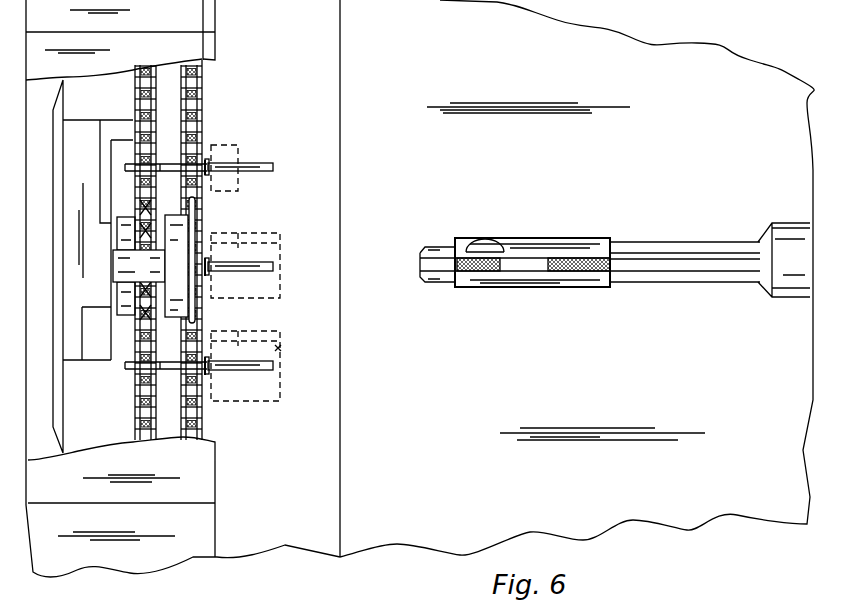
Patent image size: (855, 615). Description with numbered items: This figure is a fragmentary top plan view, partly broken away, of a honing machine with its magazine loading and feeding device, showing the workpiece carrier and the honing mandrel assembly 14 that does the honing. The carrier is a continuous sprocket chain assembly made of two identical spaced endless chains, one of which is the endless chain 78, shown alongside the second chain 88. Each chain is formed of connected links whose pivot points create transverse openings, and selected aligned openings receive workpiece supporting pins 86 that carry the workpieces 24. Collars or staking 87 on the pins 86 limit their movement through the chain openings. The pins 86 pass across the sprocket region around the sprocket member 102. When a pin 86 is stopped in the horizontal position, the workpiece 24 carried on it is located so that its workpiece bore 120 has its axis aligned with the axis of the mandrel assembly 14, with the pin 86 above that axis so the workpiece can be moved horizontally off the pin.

The honing mandrel assembly 14 is at (525, 233).
The workpiece 24 is at (268, 245).
The endless chain 78 is at (162, 87).
The workpiece supporting pin 86 is at (273, 168).
The collar or staking 87 is at (212, 162).
The second drive chain 88 is at (212, 112).
The sprocket disc 102 is at (193, 212).
The workpiece bore 120 is at (287, 243).